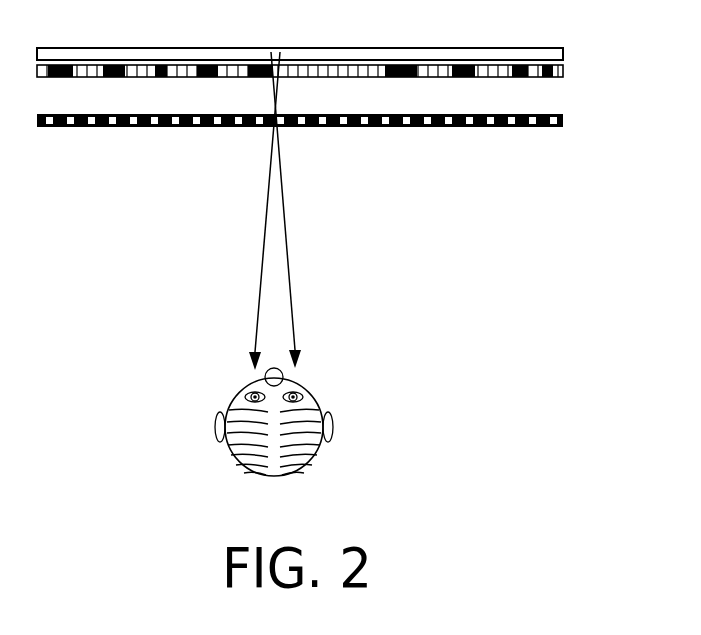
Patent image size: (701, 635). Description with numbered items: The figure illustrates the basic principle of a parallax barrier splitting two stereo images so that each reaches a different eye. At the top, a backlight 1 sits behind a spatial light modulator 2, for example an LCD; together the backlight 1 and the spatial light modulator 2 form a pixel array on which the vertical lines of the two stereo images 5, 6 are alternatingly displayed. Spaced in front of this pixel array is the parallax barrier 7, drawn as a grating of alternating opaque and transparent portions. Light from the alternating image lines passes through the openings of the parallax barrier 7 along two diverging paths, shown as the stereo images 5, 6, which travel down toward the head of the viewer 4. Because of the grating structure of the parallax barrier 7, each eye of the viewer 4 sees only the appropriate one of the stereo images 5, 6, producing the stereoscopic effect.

The backlight 1 is at (563, 54).
The spatial light modulator 2 is at (563, 72).
The parallax barrier 7 is at (563, 121).
The viewer 4 is at (318, 402).
The stereo image 5 is at (263, 233).
The stereo image 6 is at (285, 228).